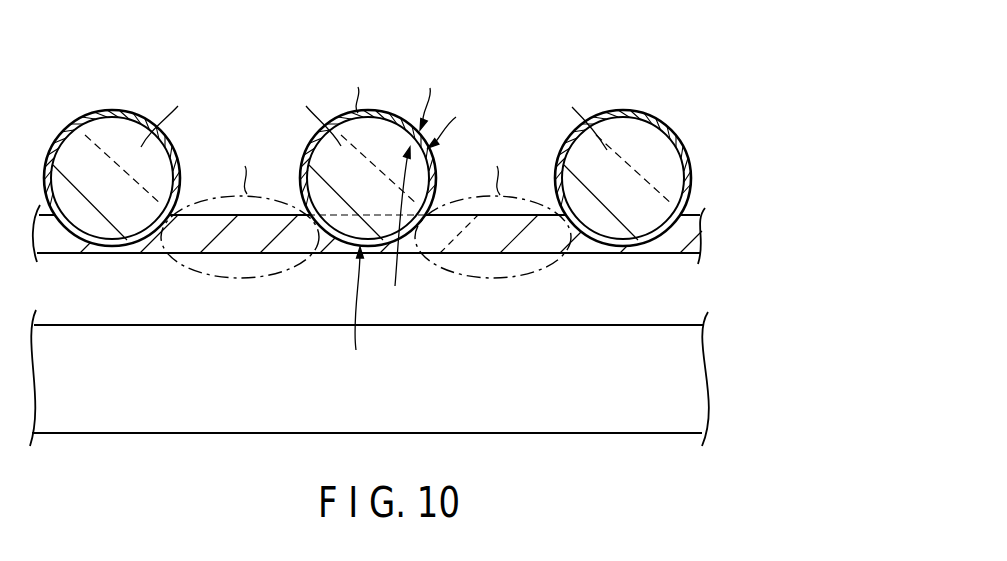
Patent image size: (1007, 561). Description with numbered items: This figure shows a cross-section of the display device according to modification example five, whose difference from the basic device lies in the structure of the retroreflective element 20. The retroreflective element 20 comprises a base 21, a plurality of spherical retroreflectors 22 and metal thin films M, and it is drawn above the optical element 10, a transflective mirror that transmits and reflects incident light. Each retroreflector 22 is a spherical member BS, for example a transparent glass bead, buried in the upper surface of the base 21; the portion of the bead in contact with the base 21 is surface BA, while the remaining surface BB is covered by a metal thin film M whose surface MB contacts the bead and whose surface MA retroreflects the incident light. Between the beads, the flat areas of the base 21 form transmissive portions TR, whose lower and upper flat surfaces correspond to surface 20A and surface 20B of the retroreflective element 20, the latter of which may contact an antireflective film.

The optical element 10 is at (751, 352).
The retroreflective element 20 is at (429, 204).
The base 21 is at (692, 243).
The retroreflector 22 is at (132, 106).
The surface 20A is at (222, 262).
The surface 20B is at (212, 206).